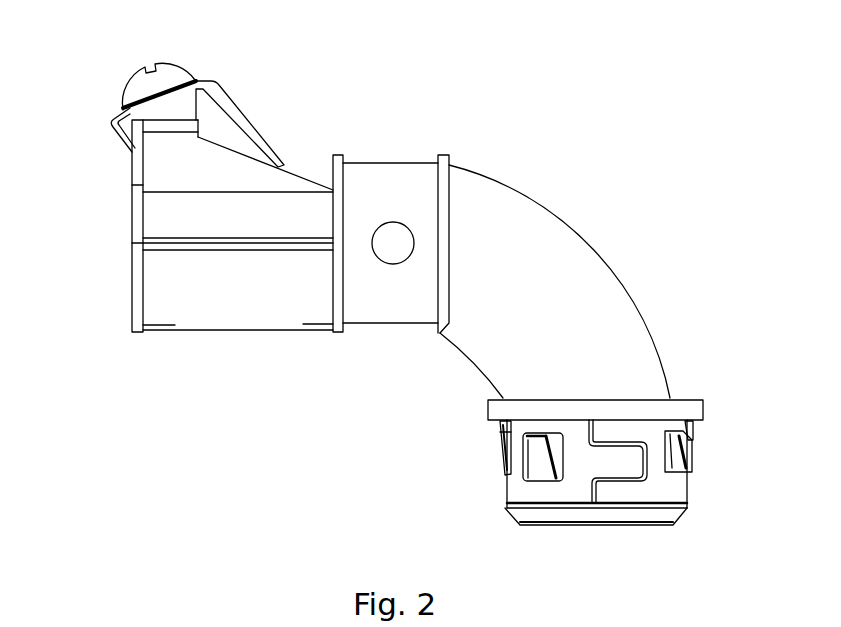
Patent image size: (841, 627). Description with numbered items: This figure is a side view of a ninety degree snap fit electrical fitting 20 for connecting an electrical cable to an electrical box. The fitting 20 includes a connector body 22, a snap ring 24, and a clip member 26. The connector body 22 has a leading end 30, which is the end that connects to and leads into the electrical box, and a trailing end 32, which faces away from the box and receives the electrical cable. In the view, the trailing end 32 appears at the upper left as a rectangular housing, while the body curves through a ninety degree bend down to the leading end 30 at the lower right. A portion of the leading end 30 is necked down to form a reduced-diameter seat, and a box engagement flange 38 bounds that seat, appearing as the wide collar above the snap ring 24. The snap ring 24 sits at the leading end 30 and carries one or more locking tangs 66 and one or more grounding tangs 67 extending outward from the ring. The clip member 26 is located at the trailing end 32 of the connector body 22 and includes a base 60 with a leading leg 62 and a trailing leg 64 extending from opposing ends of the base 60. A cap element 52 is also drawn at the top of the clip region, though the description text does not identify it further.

The ninety degree snap fit electrical fitting 20 is at (603, 145).
The connector body 22 is at (607, 265).
The snap ring 24 is at (680, 496).
The clip member 26 is at (262, 138).
The leading end 30 is at (597, 526).
The trailing end 32 is at (132, 257).
The box engagement flange 38 is at (704, 410).
The cap 52 is at (130, 80).
The base 60 is at (197, 78).
The leading leg 62 is at (237, 112).
The trailing leg 64 is at (120, 143).
The locking tang 66 is at (690, 452).
The grounding tang 67 is at (504, 453).